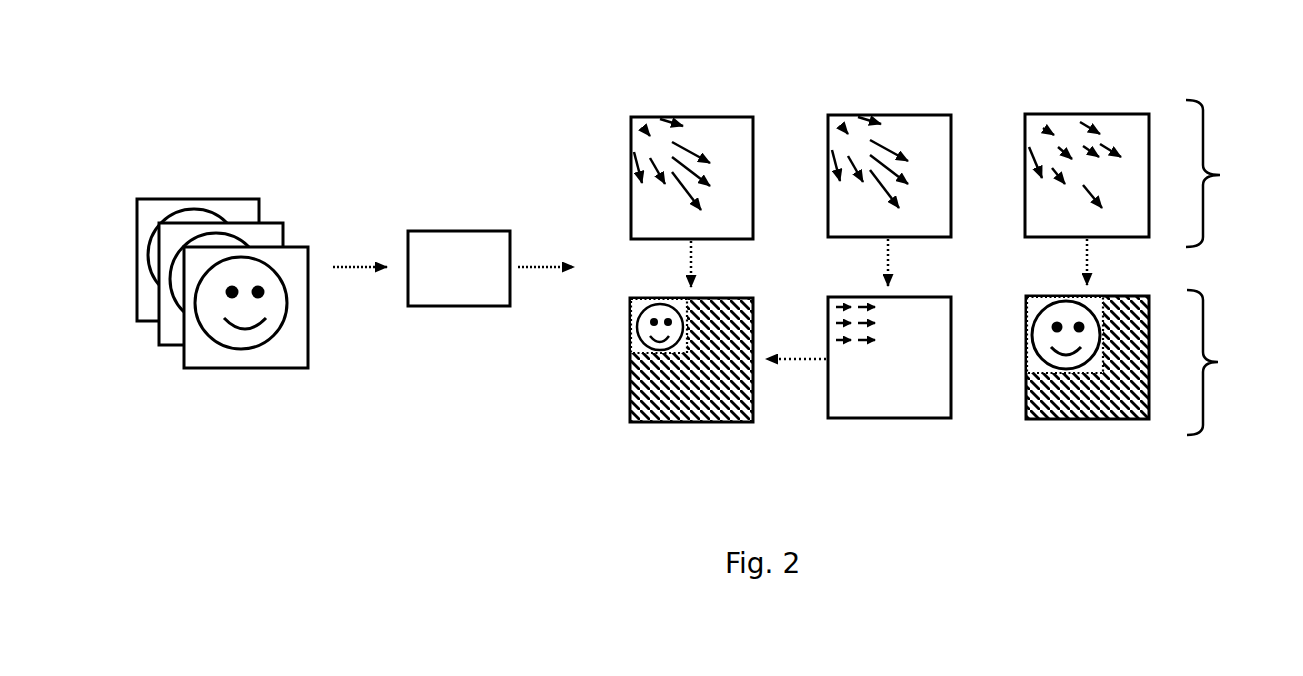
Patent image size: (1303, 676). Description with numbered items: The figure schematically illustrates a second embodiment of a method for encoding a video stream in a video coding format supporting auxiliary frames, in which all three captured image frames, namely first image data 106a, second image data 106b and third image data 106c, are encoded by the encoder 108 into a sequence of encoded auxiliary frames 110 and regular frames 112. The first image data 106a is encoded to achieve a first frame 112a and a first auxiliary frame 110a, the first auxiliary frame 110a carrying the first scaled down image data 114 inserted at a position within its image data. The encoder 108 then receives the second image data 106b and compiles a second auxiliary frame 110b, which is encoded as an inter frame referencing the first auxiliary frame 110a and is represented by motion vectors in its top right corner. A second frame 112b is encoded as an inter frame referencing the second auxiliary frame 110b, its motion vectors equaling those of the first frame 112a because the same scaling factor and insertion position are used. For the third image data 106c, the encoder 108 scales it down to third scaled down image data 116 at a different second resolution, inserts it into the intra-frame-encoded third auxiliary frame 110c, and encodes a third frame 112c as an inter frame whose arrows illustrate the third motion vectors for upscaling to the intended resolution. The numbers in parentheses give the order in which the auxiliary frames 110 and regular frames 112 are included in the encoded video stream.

The first image data 106a is at (302, 247).
The second image data 106b is at (269, 223).
The third image data 106c is at (233, 199).
The encoder 108 is at (440, 277).
The auxiliary frames 110 is at (912, 395).
The first auxiliary frame 110a is at (655, 399).
The second auxiliary frame 110b is at (855, 420).
The third auxiliary frame 110c is at (1062, 396).
The regular frames 112 is at (948, 144).
The first frame 112a is at (698, 117).
The second frame 112b is at (896, 115).
The third frame 112c is at (1093, 114).
The first scaled down image data 114 is at (632, 342).
The third scaled down image data 116 is at (1027, 332).